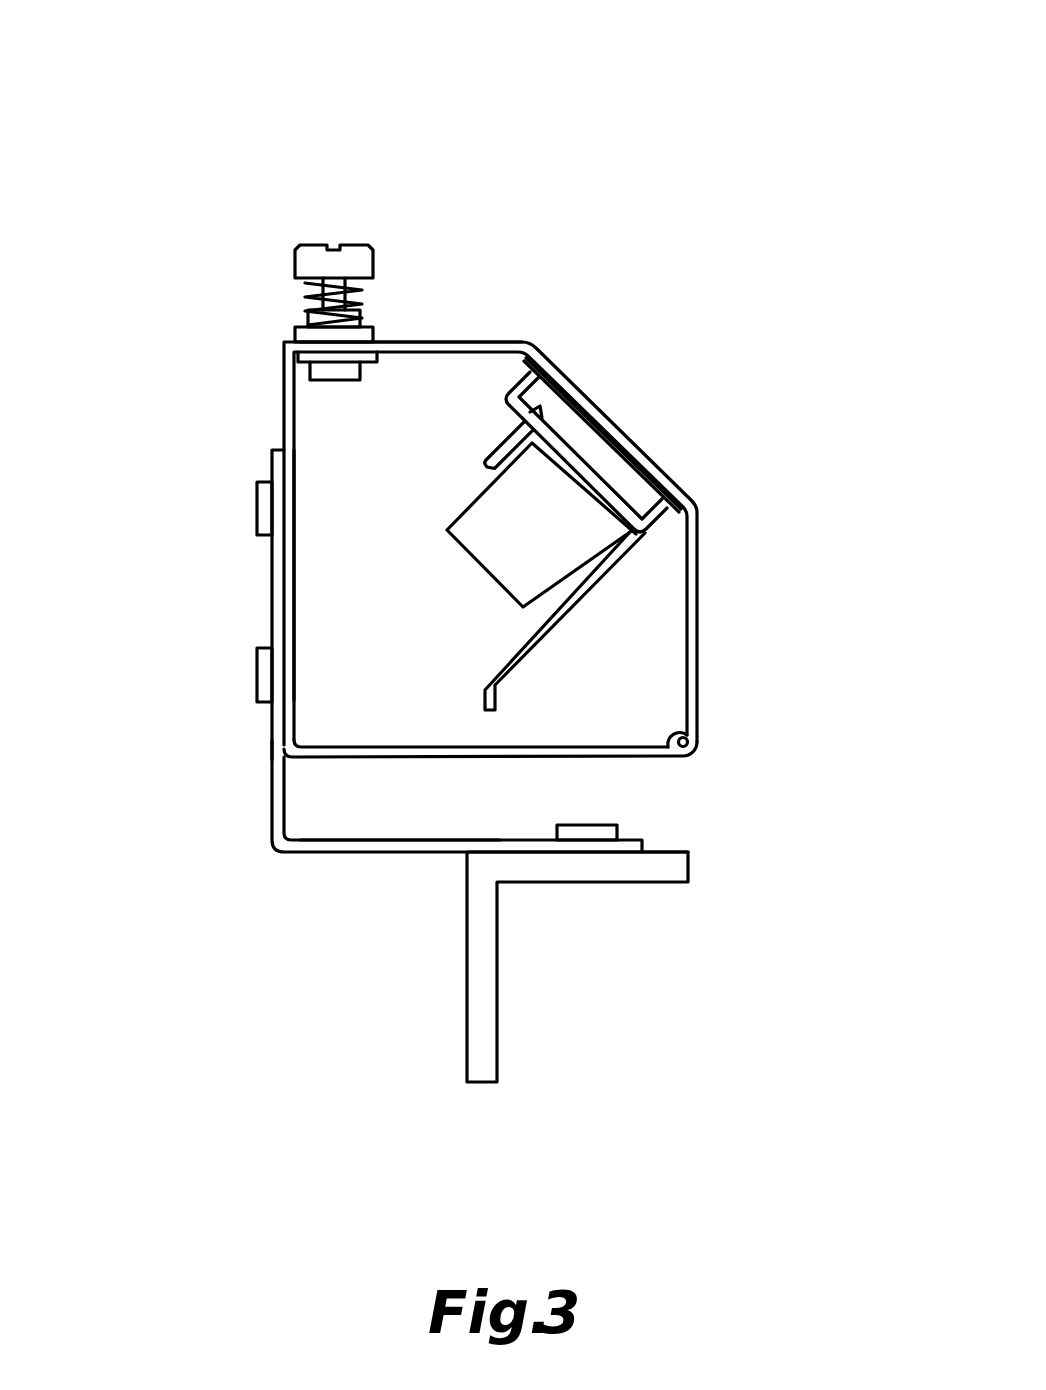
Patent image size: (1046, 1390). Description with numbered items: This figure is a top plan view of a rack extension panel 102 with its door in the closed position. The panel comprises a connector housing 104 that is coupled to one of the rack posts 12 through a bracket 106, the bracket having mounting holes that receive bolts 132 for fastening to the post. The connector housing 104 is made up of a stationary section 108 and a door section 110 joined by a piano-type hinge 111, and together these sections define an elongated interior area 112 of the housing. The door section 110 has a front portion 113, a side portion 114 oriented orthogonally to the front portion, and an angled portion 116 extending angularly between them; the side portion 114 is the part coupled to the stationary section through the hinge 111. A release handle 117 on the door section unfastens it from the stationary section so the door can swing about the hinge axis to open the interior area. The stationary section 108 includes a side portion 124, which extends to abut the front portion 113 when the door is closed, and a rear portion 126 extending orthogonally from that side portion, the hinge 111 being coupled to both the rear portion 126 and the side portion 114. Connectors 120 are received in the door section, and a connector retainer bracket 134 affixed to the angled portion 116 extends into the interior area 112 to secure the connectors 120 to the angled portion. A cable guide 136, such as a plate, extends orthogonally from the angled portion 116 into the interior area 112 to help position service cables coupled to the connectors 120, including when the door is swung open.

The post 12 is at (688, 867).
The rack extension panel 102 is at (722, 62).
The connector housing 104 is at (628, 287).
The bracket 106 is at (300, 855).
The stationary section 108 is at (212, 393).
The door section 110 is at (563, 256).
The piano-type hinge 111 is at (700, 752).
The elongated interior area 112 is at (400, 575).
The front portion 113 is at (465, 340).
The side portion 114 is at (700, 600).
The angled portion 116 is at (660, 490).
The release handle 117 is at (347, 245).
The connector 120 is at (613, 420).
The side portion 124 is at (283, 622).
The rear portion 126 is at (375, 760).
The bolt 132 is at (588, 828).
The connector retainer bracket 134 is at (505, 400).
The cable guide 136 is at (572, 620).